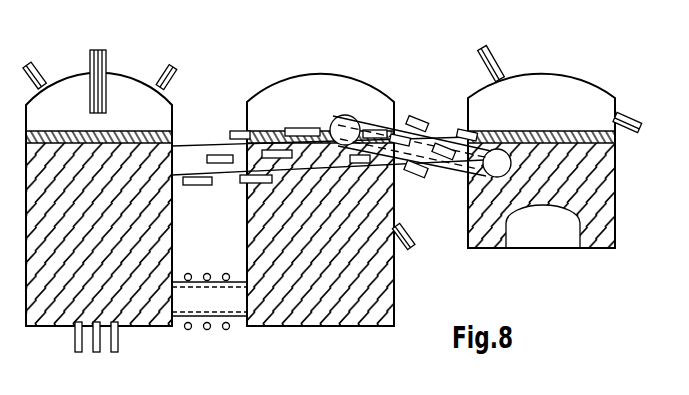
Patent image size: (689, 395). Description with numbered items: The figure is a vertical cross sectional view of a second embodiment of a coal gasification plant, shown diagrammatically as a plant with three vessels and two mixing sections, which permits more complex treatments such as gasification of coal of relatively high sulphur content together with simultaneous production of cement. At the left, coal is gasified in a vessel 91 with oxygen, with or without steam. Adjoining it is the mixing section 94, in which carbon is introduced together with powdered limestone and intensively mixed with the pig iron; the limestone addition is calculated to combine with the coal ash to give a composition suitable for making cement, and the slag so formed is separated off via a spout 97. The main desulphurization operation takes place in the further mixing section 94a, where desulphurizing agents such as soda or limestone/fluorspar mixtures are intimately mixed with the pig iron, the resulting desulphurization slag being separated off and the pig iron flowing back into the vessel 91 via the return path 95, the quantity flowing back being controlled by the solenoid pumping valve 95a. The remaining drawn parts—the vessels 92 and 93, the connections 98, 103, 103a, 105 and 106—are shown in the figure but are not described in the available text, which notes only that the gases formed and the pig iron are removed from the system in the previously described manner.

The vessel 91 is at (131, 72).
The third treatment vessel 92 is at (574, 72).
The second treatment vessel 93 is at (289, 72).
The mixing section 94 is at (187, 150).
The mixing section 94a is at (358, 118).
The pig iron return path 95 is at (216, 302).
The solenoid pumping valve 95a is at (205, 332).
The spout 97 is at (627, 112).
The drain pipe 98 is at (406, 247).
The inlet pipe 103 is at (491, 50).
The inlet pipe 103a is at (167, 66).
The feed pipe 105 is at (95, 48).
The supply pipe 106 is at (34, 64).